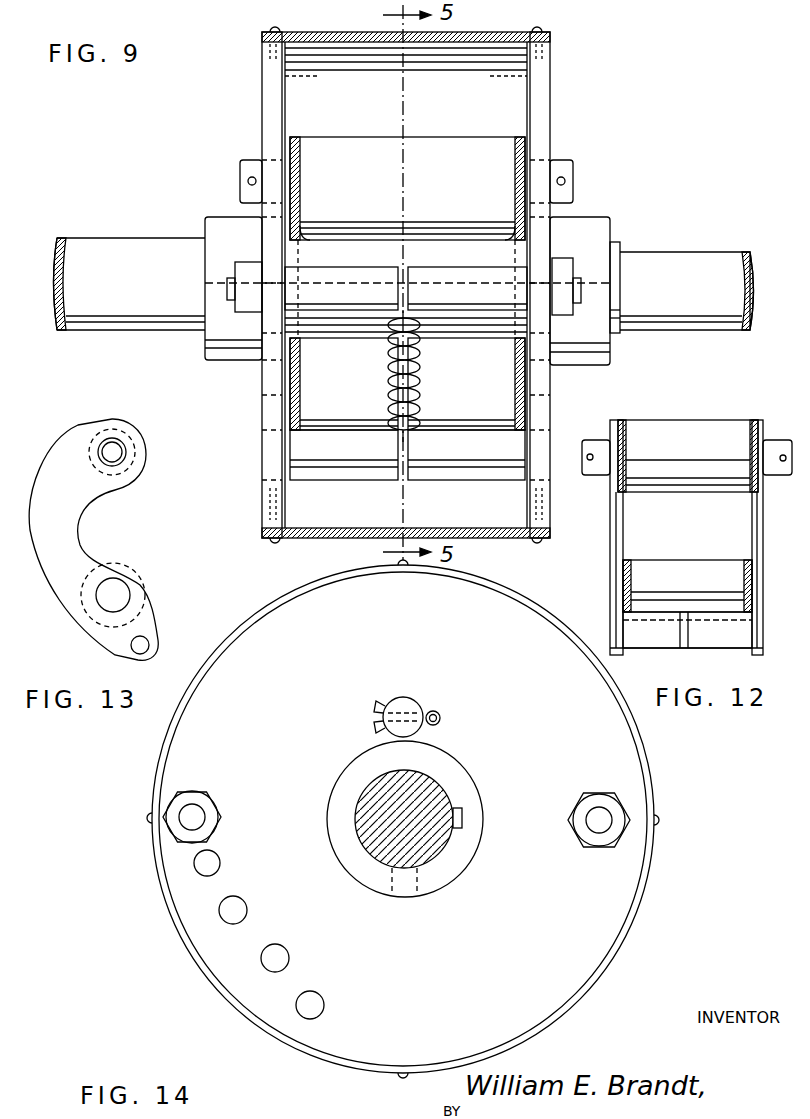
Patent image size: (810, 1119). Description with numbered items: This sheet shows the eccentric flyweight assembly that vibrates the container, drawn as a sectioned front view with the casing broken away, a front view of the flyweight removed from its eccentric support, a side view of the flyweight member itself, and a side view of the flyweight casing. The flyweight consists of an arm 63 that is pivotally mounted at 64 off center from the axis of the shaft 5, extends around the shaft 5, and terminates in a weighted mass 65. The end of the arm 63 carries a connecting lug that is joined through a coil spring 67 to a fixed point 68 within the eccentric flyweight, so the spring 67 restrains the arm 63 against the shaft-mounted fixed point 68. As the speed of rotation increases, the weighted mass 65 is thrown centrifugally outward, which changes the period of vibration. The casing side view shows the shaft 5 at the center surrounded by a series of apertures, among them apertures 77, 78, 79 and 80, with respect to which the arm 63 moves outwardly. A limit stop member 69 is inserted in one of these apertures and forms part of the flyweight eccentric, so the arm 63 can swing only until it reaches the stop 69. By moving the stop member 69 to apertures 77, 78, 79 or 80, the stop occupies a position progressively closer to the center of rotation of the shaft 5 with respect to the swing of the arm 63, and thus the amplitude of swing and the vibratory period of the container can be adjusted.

In FIG. 9, the shaft 5 is at (165, 324).
In FIG. 14, the shaft 5 is at (383, 852).
In FIG. 9, the arm 63 is at (300, 230).
In FIG. 12, the arm 63 is at (622, 542).
In FIG. 9, the pivot 64 is at (418, 152).
In FIG. 12, the pivot 64 is at (593, 440).
In FIG. 13, the pivot 64 is at (118, 455).
In FIG. 14, the pivot 64 is at (405, 708).
In FIG. 9, the weighted mass 65 is at (322, 402).
In FIG. 12, the weighted mass 65 is at (645, 583).
In FIG. 9, the coil spring 67 is at (421, 380).
In FIG. 9, the fixed point 68 is at (482, 302).
In FIG. 14, the fixed point 68 is at (597, 824).
In FIG. 14, the limit stop member 69 is at (196, 815).
In FIG. 14, the aperture 77 is at (197, 873).
In FIG. 14, the aperture 78 is at (221, 920).
In FIG. 14, the aperture 79 is at (289, 950).
In FIG. 14, the aperture 80 is at (325, 1002).